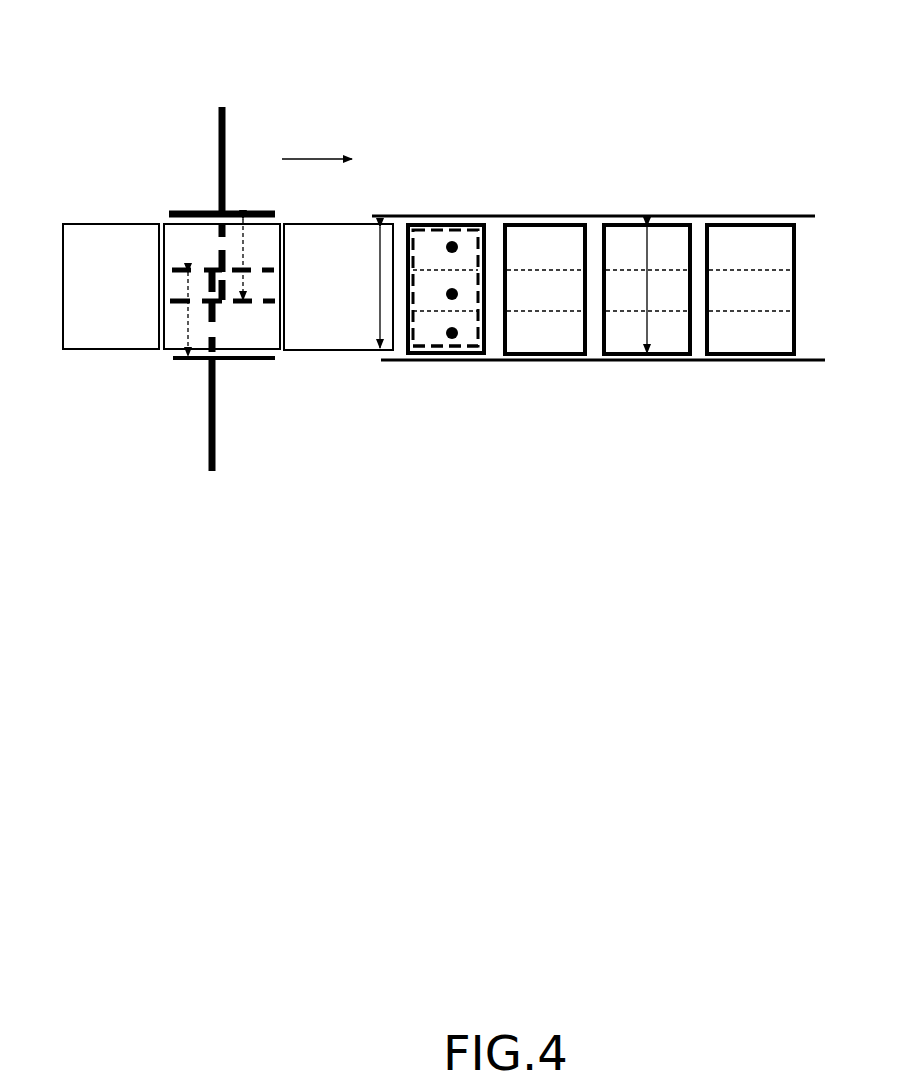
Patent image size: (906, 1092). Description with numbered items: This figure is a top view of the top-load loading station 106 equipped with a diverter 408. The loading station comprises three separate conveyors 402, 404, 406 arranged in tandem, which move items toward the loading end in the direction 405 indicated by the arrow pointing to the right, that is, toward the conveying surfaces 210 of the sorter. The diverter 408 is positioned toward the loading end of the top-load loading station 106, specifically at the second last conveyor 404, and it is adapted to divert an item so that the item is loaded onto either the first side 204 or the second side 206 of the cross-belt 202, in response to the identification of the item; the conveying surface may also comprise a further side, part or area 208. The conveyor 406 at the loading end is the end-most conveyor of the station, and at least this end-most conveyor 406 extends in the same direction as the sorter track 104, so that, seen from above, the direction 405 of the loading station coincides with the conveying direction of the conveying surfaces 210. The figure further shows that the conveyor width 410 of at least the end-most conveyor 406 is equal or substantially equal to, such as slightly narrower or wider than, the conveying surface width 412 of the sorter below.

The sorter track 104 is at (752, 212).
The top-load loading station 106 is at (157, 128).
The cross-belt 202 is at (433, 223).
The first side 204 is at (452, 247).
The second side 206 is at (452, 294).
The further side 208 is at (452, 333).
The conveying surfaces 210 is at (457, 348).
The conveyor 402 is at (83, 350).
The second last conveyor 404 is at (168, 350).
The direction 405 is at (325, 158).
The end-most conveyor 406 is at (317, 350).
The diverter 408 is at (273, 103).
The conveyor width 410 is at (380, 352).
The conveying surface width 412 is at (647, 356).